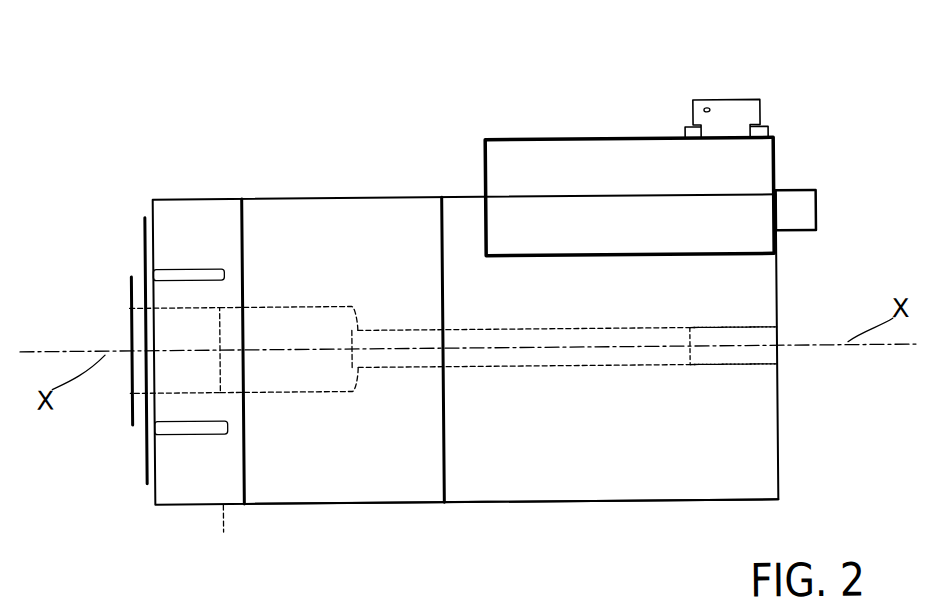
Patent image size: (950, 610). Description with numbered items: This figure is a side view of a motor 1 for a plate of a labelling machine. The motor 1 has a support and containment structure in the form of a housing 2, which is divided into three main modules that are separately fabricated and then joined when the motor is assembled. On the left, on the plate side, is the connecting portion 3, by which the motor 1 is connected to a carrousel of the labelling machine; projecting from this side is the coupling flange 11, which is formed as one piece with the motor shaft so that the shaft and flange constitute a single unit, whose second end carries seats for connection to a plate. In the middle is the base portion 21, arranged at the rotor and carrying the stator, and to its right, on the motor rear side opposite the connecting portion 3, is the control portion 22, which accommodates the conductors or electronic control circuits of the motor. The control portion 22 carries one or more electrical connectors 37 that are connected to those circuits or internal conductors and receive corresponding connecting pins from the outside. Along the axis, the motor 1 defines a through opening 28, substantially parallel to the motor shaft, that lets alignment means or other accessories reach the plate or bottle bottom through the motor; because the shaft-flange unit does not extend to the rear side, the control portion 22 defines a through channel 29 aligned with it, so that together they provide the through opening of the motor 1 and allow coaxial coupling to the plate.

The motor 1 is at (390, 158).
The housing 2 is at (309, 210).
The connecting portion 3 is at (180, 208).
The coupling flange 11 is at (130, 327).
The base portion 21 is at (352, 482).
The control portion 22 is at (635, 466).
The through opening 28 is at (520, 353).
The through channel 29 is at (750, 327).
The electrical connector 37 is at (733, 117).